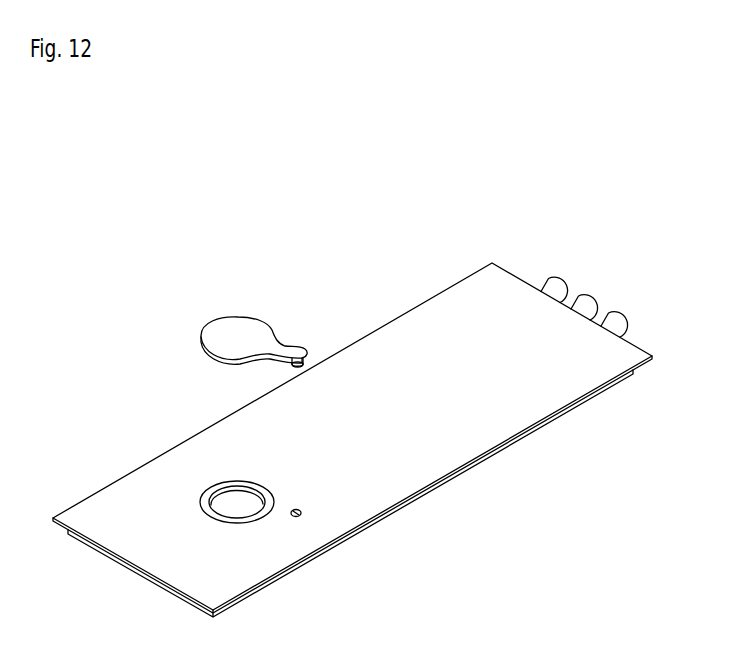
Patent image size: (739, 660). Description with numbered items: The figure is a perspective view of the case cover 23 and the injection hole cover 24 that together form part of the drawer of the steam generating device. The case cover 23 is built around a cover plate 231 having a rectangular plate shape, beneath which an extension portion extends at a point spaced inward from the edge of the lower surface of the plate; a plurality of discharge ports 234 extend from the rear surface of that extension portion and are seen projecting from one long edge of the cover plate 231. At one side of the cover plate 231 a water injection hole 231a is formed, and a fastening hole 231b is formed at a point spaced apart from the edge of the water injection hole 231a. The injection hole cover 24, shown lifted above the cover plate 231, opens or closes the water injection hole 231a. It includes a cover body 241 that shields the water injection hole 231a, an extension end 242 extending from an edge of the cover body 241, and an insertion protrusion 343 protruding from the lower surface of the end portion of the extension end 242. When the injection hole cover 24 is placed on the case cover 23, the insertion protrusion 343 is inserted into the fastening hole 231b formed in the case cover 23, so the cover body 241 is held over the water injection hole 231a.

The case cover 23 is at (380, 228).
The cover plate 231 is at (520, 408).
The water injection hole 231a is at (229, 503).
The fastening hole 231b is at (300, 512).
The discharge ports 234 is at (556, 283).
The injection hole cover 24 is at (345, 257).
The cover body 241 is at (238, 330).
The extension end 242 is at (294, 348).
The pin head 343 is at (306, 366).